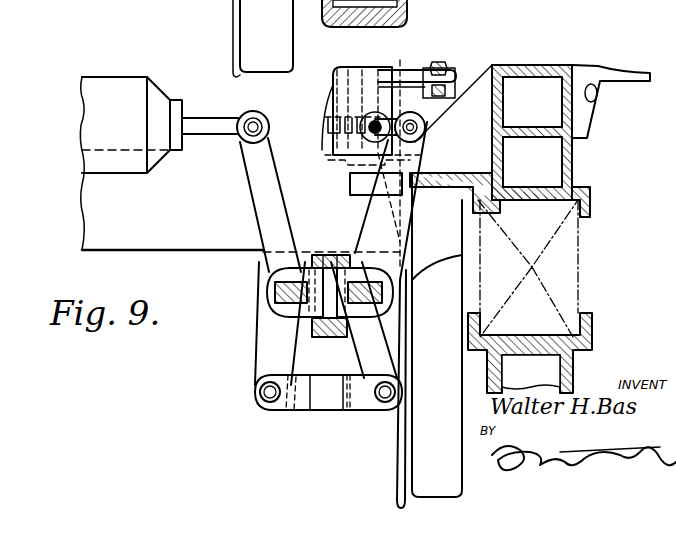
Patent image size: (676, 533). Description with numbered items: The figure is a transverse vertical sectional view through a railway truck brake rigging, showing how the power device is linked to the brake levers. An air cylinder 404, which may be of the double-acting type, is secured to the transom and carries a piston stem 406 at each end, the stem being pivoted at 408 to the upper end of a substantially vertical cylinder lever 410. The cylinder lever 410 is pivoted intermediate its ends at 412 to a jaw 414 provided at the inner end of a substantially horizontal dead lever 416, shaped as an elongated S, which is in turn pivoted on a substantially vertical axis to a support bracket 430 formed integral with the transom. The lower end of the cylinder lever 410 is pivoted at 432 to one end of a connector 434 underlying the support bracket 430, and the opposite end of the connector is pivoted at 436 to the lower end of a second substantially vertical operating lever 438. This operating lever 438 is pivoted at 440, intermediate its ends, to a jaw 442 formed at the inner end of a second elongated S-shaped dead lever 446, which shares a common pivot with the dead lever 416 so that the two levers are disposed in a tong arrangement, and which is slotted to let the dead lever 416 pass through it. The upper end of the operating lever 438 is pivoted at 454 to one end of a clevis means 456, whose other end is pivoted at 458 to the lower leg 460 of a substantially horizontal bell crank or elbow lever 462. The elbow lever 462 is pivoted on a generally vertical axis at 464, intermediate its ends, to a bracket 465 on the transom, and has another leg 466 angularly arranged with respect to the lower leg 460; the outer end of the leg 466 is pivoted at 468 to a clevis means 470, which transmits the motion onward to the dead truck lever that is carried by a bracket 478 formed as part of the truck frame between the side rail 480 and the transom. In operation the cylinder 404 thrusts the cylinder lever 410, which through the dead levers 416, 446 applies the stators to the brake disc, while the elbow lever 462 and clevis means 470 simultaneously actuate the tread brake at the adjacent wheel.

The air cylinder 404 is at (98, 90).
The piston stem 406 is at (200, 130).
The pivot 408 is at (246, 114).
The cylinder lever 410 is at (254, 193).
The pivot 412 is at (272, 292).
The jaw 414 is at (271, 304).
The dead lever 416 is at (276, 282).
The support bracket 430 is at (327, 253).
The pivot 432 is at (259, 391).
The connector 434 is at (315, 405).
The pivot 436 is at (383, 402).
The operating lever 438 is at (366, 358).
The pivot 440 is at (395, 290).
The jaw 442 is at (398, 277).
The dead lever 446 is at (385, 303).
The pivot 454 is at (385, 122).
The clevis means 456 is at (370, 172).
The pivot 458 is at (360, 128).
The lower leg 460 is at (360, 117).
The elbow lever 462 is at (358, 142).
The pivot 464 is at (377, 68).
The bracket 465 is at (333, 78).
The leg 466 is at (426, 72).
The pivot 468 is at (457, 84).
The clevis means 470 is at (447, 66).
The bracket 478 is at (488, 170).
The side rail 480 is at (568, 67).